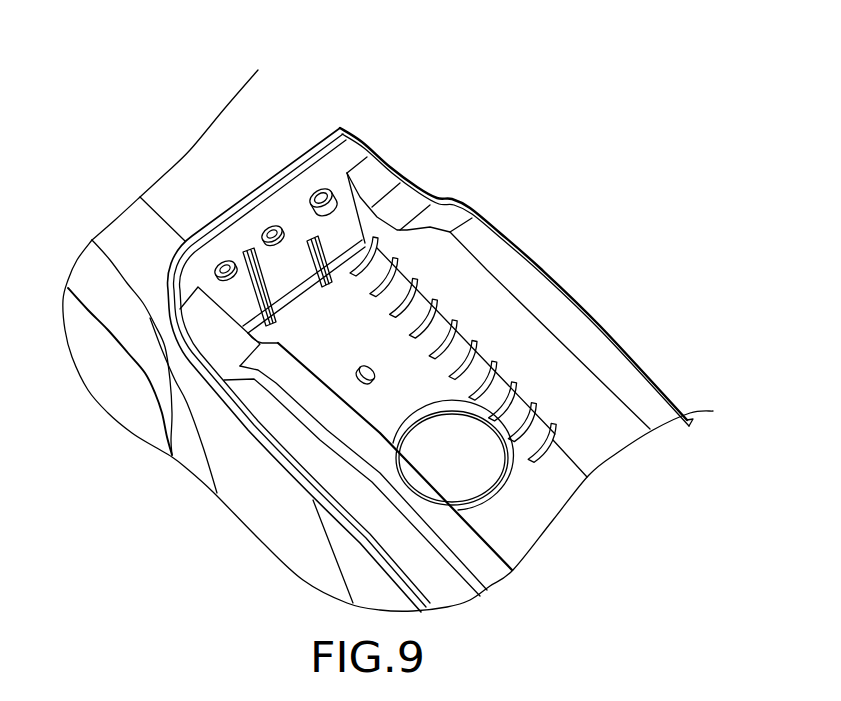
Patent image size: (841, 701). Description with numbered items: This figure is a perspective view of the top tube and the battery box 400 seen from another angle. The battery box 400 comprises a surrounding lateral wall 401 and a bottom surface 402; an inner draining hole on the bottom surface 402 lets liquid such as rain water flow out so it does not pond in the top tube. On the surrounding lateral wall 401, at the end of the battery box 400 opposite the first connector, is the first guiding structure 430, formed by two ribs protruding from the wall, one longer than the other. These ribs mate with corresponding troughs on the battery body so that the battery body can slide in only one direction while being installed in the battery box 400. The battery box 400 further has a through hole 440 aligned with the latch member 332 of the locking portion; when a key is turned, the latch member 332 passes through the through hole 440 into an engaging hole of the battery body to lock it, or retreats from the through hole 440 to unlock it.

The battery box 400 is at (541, 297).
The surrounding lateral wall 401 is at (290, 200).
The bottom surface 402 is at (565, 467).
The first guiding structure 430 is at (316, 262).
The through hole 440 is at (314, 188).
The latch member 332 is at (347, 173).